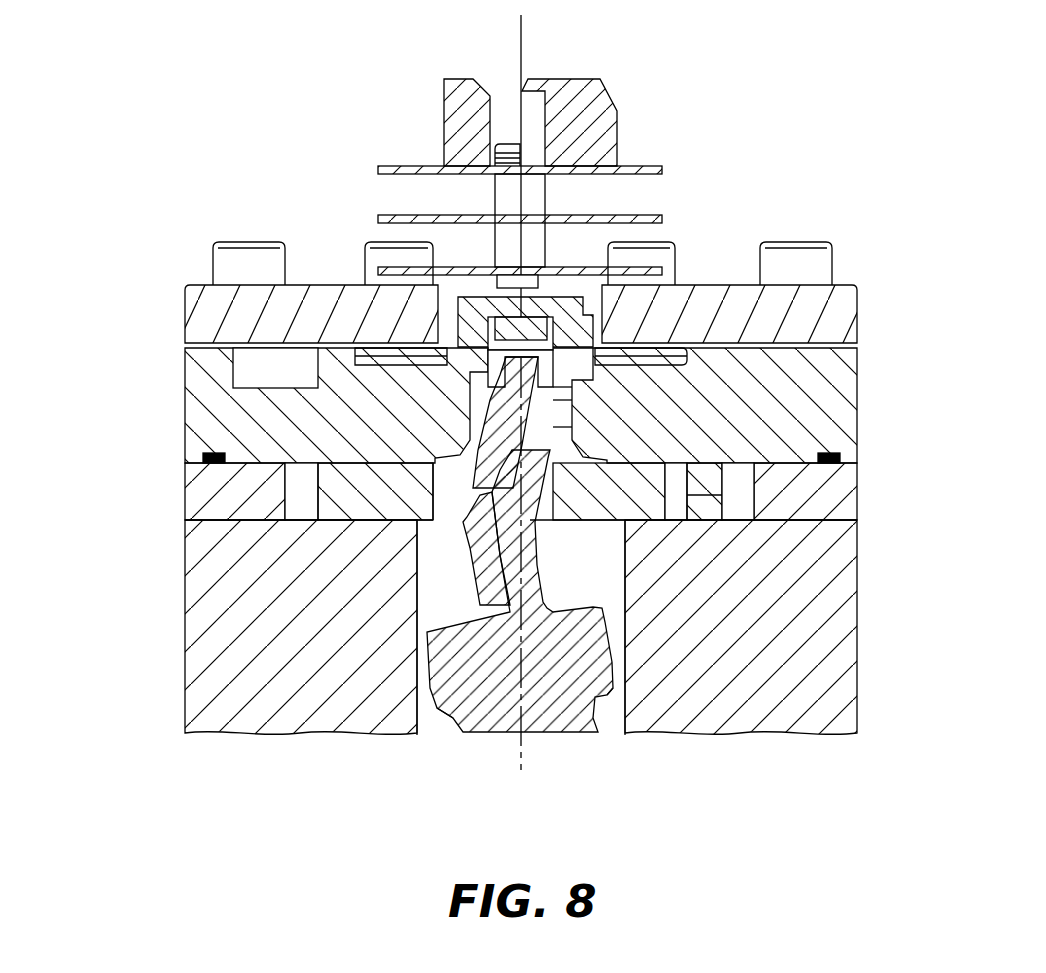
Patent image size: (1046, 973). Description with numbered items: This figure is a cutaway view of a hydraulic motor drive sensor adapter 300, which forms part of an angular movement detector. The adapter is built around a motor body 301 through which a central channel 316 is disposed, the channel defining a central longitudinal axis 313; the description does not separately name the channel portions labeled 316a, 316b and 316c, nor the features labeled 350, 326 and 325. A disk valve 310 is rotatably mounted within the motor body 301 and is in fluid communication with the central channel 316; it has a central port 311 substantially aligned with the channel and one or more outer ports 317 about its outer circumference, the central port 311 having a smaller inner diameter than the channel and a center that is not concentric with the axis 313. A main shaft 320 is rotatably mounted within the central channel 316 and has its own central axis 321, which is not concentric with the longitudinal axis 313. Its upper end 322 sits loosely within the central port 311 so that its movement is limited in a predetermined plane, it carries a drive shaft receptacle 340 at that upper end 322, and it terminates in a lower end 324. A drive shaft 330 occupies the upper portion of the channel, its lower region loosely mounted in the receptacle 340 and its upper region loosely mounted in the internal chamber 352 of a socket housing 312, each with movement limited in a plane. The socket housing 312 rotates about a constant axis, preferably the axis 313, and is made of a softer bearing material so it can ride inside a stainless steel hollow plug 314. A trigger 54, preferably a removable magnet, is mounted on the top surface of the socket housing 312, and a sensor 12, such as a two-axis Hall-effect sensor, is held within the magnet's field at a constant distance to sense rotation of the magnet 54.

The hydraulic motor drive sensor adapter 300 is at (170, 100).
The sensor 12 is at (374, 155).
The central longitudinal axis 313 is at (524, 52).
The hollow plug 314 is at (488, 320).
The trigger 54 is at (486, 353).
The clamp block 350 is at (556, 327).
The internal chamber 352 is at (548, 356).
The socket housing 312 is at (478, 357).
The stem upper portion 316c is at (566, 407).
The drive shaft 330 is at (466, 439).
The stem middle portion 316b is at (551, 447).
The drive shaft receptacle 340 is at (355, 491).
The outer ports 317 is at (688, 494).
The disk valve 310 is at (455, 505).
The upper end 322 is at (462, 503).
The central port 311 is at (470, 518).
The cavity 326 is at (607, 555).
The stem lower portion 316a is at (604, 579).
The motor body 301 is at (222, 640).
The central channel 316 is at (625, 583).
The central axis 321 is at (508, 598).
The main shaft 320 is at (426, 687).
The lower end 324 is at (478, 735).
The stem shoulder 325 is at (563, 680).